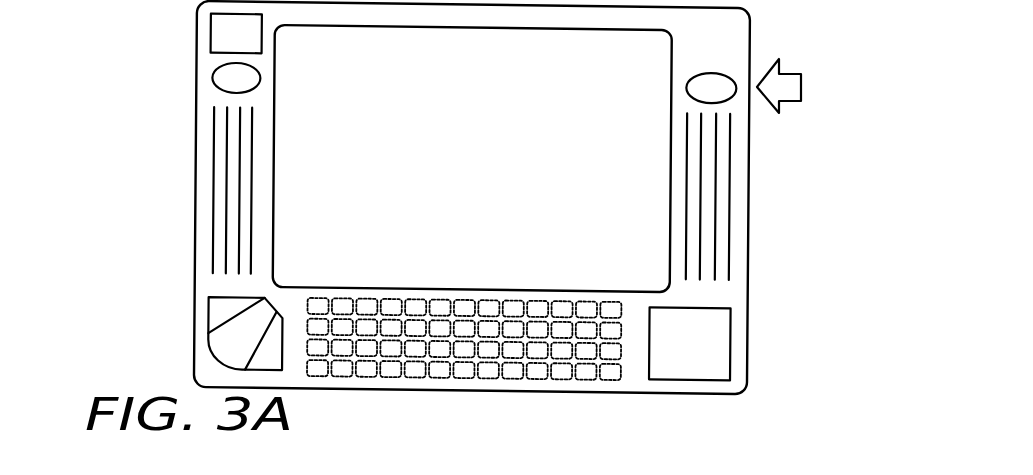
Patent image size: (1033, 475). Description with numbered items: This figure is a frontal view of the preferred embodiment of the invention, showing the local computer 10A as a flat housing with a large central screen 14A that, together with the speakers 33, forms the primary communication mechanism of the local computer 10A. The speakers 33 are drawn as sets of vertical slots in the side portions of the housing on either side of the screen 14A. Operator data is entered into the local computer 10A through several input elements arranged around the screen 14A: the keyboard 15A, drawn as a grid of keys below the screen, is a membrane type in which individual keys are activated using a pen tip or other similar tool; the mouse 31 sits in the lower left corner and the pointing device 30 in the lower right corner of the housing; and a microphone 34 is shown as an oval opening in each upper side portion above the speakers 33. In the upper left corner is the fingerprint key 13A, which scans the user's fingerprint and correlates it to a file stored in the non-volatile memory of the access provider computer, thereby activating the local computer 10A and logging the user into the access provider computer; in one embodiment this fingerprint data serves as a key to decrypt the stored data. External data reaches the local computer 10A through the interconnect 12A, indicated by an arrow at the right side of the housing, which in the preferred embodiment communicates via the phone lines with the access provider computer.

The local computer 10A is at (202, 283).
The interconnect 12A is at (792, 86).
The fingerprint key 13A is at (230, 31).
The screen 14A is at (500, 167).
The keyboard 15A is at (583, 372).
The pointing device 30 is at (698, 360).
The mouse 31 is at (218, 339).
The speakers 33 is at (228, 131).
The microphone 34 is at (235, 78).